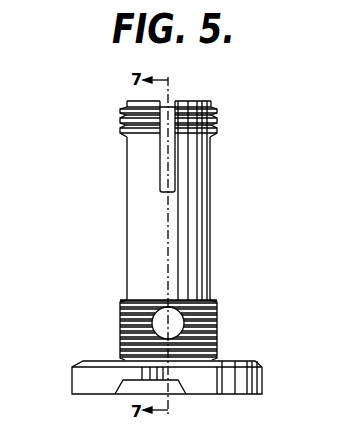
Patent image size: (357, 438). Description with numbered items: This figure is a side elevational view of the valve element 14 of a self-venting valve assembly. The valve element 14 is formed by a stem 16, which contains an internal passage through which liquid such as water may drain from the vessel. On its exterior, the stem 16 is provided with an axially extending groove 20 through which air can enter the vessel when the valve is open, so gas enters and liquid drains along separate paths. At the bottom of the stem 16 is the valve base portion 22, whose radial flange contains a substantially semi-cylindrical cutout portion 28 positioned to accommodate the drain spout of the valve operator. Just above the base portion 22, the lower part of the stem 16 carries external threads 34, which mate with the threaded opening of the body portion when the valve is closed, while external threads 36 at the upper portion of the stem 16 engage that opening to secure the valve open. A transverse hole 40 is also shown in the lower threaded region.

The valve element 14 is at (233, 207).
The stem 16 is at (128, 222).
The axially extending groove 20 is at (171, 104).
The valve base portion 22 is at (258, 375).
The semi-cylindrical cutout portion 28 is at (181, 393).
The external threads 34 is at (122, 326).
The external threads 36 is at (217, 121).
The transverse hole 40 is at (178, 319).